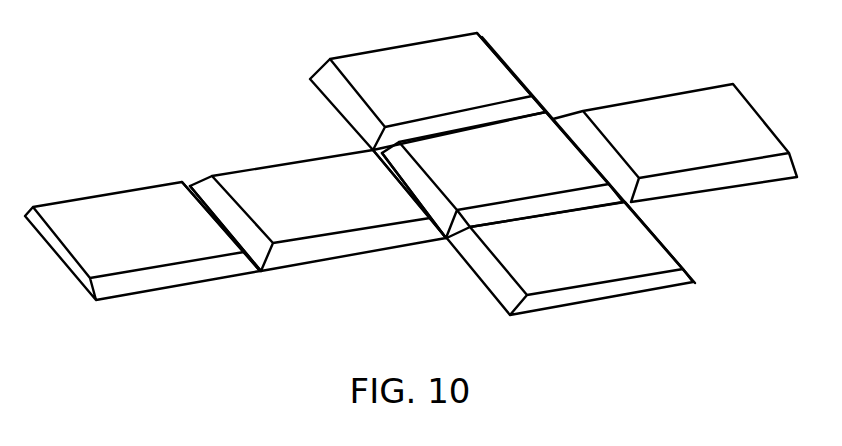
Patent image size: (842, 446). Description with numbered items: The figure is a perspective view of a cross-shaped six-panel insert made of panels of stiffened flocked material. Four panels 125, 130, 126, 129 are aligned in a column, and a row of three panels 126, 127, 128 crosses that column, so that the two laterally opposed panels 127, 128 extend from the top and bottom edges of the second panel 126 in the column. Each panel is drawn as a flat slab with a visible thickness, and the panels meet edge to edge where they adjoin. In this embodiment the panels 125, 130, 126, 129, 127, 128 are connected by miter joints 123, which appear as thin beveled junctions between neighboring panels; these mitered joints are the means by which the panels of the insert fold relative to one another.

The miter joint 123 is at (205, 178).
The panel 125 is at (118, 235).
The second panel 126 is at (486, 170).
The panel 127 is at (556, 255).
The panel 128 is at (414, 87).
The panel 129 is at (669, 140).
The panel 130 is at (302, 203).